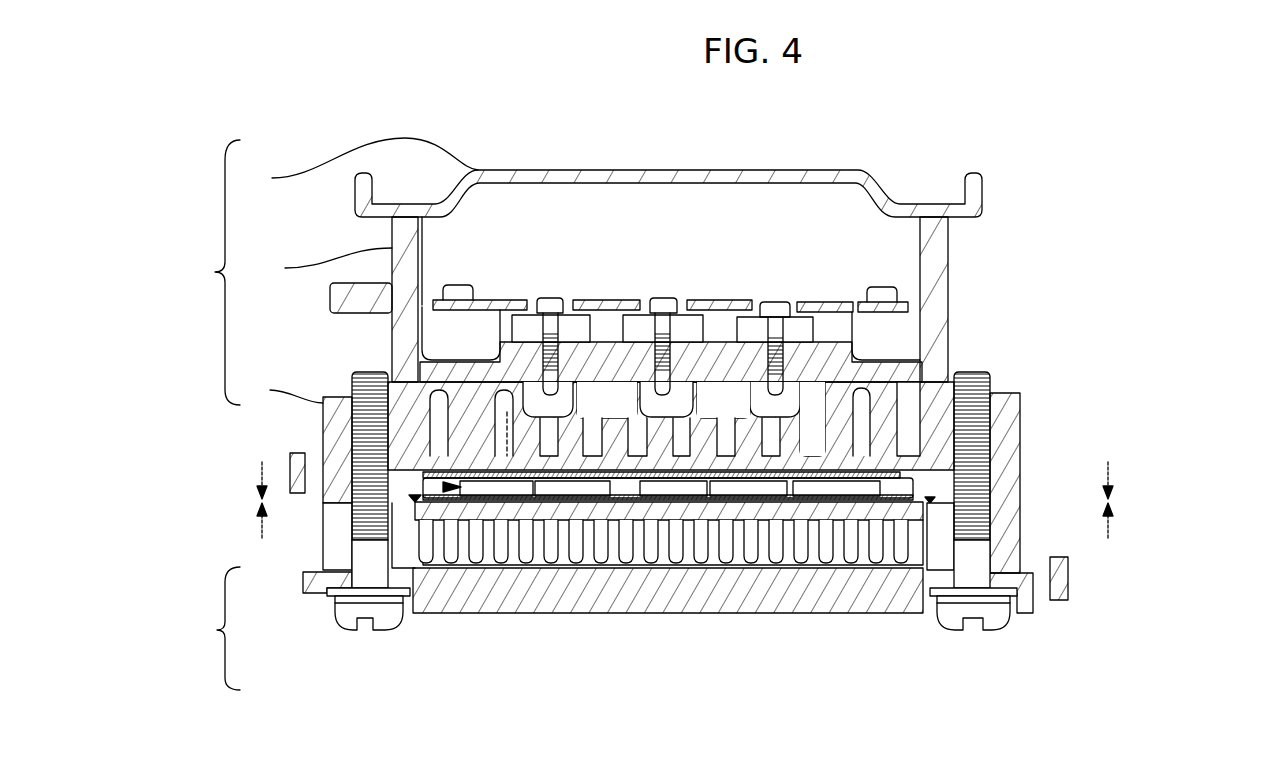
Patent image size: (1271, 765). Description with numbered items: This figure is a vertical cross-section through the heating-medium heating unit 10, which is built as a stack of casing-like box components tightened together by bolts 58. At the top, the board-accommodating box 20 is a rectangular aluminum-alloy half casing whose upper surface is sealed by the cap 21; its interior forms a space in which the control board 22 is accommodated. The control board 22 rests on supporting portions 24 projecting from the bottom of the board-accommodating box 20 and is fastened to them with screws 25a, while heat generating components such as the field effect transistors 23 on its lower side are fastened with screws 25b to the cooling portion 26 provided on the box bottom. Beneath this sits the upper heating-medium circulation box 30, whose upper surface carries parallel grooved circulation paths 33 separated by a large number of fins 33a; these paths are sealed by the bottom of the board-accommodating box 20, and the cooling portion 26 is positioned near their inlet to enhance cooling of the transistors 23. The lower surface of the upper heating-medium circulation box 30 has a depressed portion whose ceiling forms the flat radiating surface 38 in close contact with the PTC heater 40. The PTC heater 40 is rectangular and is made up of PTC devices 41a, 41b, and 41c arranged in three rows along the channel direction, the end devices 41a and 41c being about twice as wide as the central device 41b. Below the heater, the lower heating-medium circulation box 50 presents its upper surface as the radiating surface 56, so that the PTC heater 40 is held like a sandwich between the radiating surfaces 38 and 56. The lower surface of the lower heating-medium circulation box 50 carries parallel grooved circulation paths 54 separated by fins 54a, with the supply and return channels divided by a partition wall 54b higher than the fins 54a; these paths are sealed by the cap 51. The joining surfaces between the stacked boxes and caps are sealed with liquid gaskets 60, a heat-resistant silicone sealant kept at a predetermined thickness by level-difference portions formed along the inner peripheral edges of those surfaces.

The heating-medium heating unit 10 is at (1013, 146).
The board-accommodating box 20 is at (593, 299).
The cap 21 is at (610, 177).
The control board 22 is at (578, 312).
The field effect transistors 23 is at (740, 330).
The supporting portions 24 is at (462, 333).
The screws 25a is at (456, 286).
The screws 25b is at (553, 297).
The cooling portion 26 is at (605, 342).
The upper heating-medium circulation box 30 is at (629, 474).
The circulation paths 33 is at (623, 412).
The fins 33a is at (724, 428).
The flat radiating surface 38 is at (900, 486).
The PTC heater 40 is at (445, 487).
The PTC device 41a is at (530, 515).
The PTC device 41b is at (678, 520).
The PTC device 41c is at (828, 520).
The lower heating-medium circulation box 50 is at (323, 533).
The cap 51 is at (323, 578).
The circulation paths 54 is at (645, 520).
The fins 54a is at (585, 508).
The partition wall 54b is at (690, 520).
The radiating surface 56 is at (737, 540).
The bolts 58 is at (382, 626).
The liquid gaskets 60 is at (415, 500).